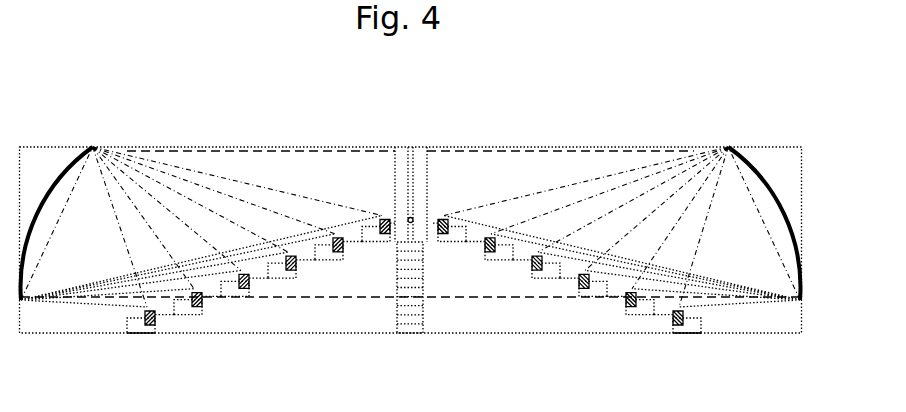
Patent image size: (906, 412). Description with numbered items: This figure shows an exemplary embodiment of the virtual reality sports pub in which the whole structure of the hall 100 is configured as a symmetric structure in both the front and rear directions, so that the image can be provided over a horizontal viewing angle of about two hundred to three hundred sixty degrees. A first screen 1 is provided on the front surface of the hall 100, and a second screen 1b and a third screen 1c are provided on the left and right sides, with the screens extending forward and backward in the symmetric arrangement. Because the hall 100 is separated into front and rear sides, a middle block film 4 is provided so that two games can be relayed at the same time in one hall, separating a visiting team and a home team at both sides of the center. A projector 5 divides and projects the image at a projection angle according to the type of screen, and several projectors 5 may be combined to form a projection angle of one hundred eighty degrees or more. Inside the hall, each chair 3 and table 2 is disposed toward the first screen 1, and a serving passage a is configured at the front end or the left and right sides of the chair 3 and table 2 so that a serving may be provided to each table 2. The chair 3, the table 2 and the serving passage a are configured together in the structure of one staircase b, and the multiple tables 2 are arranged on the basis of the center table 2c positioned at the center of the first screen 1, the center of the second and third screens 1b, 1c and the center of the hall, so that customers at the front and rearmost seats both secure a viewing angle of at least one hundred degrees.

The hall 100 is at (452, 158).
The first screen 1 is at (30, 253).
The second screen 1b is at (410, 194).
The third screen 1c is at (410, 262).
The table 2 is at (127, 324).
The center table 2c is at (284, 283).
The chair 3 is at (146, 334).
The middle block film 4 is at (408, 175).
The projector 5 is at (302, 150).
The serving passage a is at (414, 273).
The staircase b is at (410, 334).